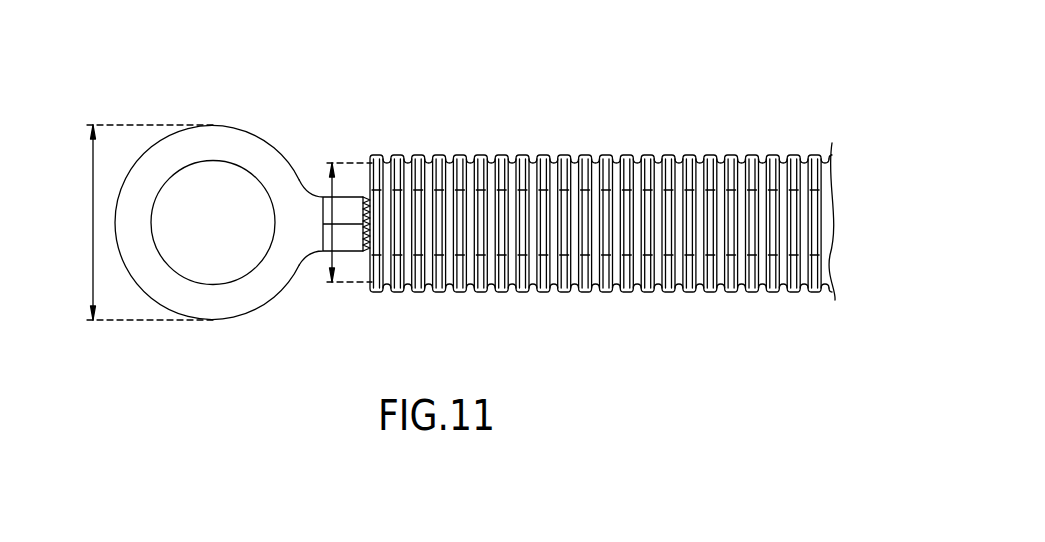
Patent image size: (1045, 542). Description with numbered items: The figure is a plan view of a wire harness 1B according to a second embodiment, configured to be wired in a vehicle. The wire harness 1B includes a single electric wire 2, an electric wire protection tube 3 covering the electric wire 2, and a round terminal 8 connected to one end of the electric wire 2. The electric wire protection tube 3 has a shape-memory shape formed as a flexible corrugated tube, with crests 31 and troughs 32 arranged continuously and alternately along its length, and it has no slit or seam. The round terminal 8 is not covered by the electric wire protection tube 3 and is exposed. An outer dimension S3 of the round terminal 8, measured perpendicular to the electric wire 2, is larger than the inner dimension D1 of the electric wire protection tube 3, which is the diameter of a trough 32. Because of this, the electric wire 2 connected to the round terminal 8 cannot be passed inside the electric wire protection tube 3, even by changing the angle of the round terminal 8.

The wire harness 1B is at (746, 42).
The electric wire 2 is at (771, 190).
The electric wire protection tube 3 is at (606, 155).
The crest 31 is at (421, 155).
The trough 32 is at (429, 292).
The round terminal 8 is at (255, 133).
The outer dimension S3 is at (93, 222).
The inner dimension D1 is at (330, 262).